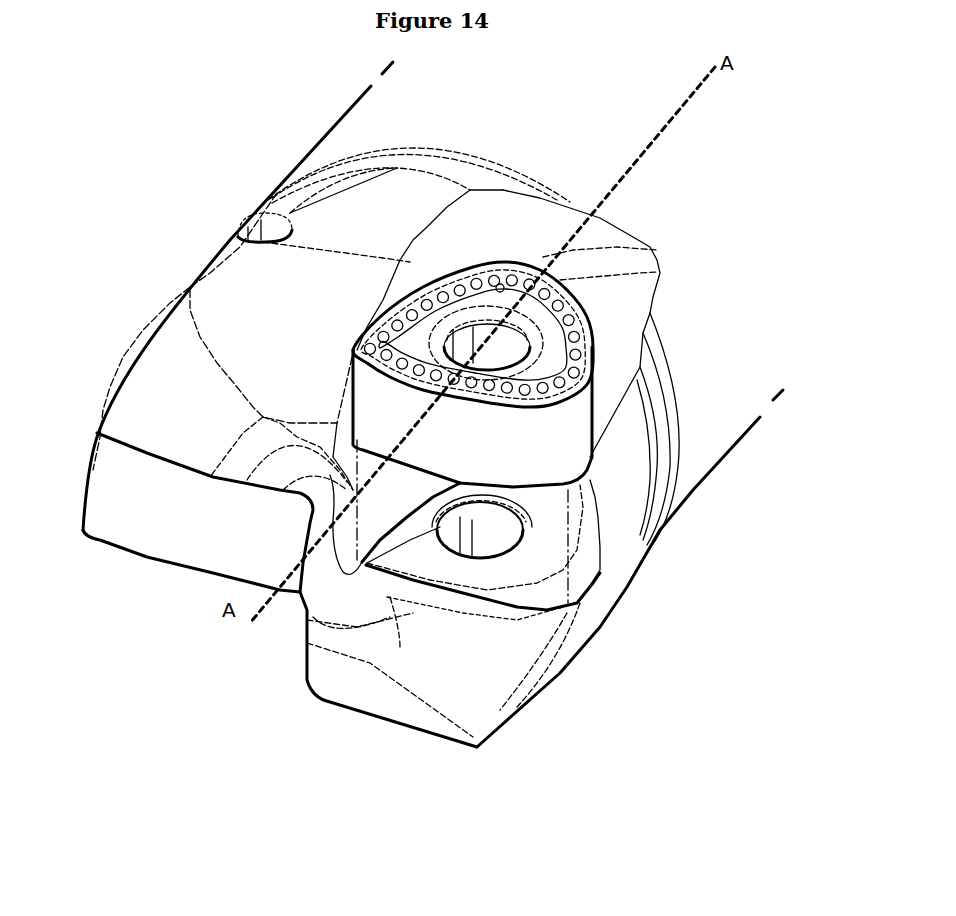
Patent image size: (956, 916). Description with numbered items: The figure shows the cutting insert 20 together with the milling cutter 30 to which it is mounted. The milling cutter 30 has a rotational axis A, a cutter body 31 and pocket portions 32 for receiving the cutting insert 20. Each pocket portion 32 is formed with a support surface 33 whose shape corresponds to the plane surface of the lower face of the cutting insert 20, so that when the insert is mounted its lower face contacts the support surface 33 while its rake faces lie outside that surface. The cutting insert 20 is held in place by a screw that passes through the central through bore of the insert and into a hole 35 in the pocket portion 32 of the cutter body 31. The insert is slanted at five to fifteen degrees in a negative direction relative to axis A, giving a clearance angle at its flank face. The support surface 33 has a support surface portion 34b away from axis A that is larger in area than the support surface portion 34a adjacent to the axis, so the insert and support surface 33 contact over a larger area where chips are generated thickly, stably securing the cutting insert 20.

The cutting insert 20 is at (153, 523).
The milling cutter 30 is at (744, 344).
The cutter body 31 is at (710, 435).
The pocket portion 32 is at (440, 597).
The support surface 33 is at (540, 525).
The support surface portion 34a is at (420, 547).
The support surface portion 34b is at (532, 575).
The hole 35 is at (490, 553).